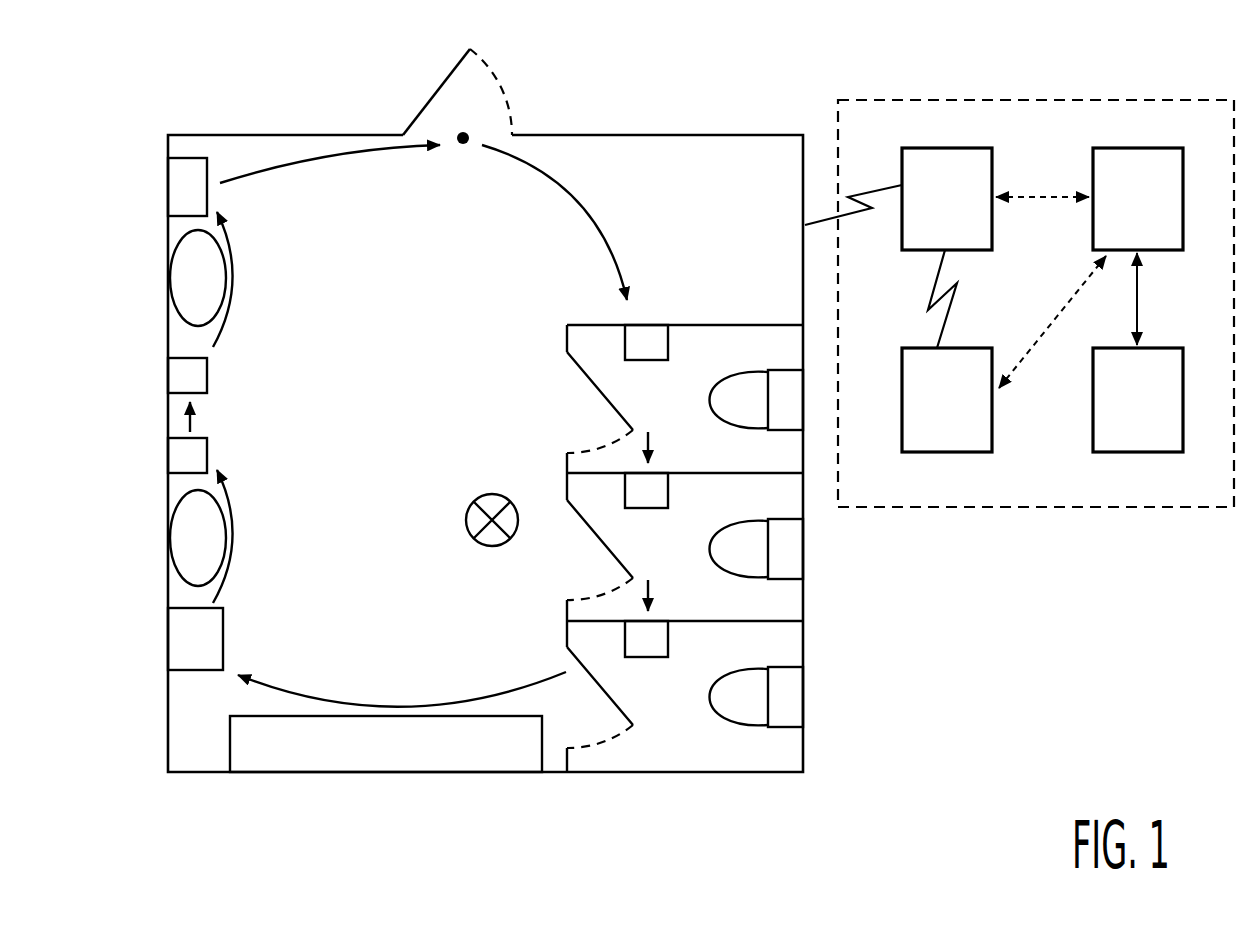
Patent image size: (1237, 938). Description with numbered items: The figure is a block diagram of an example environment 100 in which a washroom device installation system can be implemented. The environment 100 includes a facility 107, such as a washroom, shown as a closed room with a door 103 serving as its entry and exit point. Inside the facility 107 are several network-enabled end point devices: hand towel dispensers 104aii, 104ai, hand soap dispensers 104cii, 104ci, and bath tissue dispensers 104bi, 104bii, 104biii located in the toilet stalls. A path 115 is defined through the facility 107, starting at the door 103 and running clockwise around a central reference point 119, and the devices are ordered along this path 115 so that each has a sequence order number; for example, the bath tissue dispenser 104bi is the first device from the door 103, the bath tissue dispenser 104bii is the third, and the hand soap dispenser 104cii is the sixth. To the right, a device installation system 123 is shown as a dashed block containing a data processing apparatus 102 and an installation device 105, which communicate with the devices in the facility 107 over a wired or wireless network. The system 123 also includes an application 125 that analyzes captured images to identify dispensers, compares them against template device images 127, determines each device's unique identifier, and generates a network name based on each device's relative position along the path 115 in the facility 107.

The environment 100 is at (693, 82).
The data processing apparatus 102 is at (966, 414).
The door 103 is at (407, 90).
The hand towel dispenser 104aii is at (207, 193).
The hand towel dispenser 104ai is at (223, 643).
The hand soap dispenser 104cii is at (207, 383).
The hand soap dispenser 104ci is at (207, 455).
The bath tissue dispenser 104bi is at (647, 360).
The bath tissue dispenser 104bii is at (647, 508).
The bath tissue dispenser 104biii is at (647, 657).
The installation device 105 is at (966, 214).
The facility 107 is at (423, 341).
The path 115 is at (543, 175).
The central reference point 119 is at (500, 492).
The device installation system 123 is at (1112, 507).
The application 125 is at (1157, 214).
The template device images 127 is at (1157, 414).